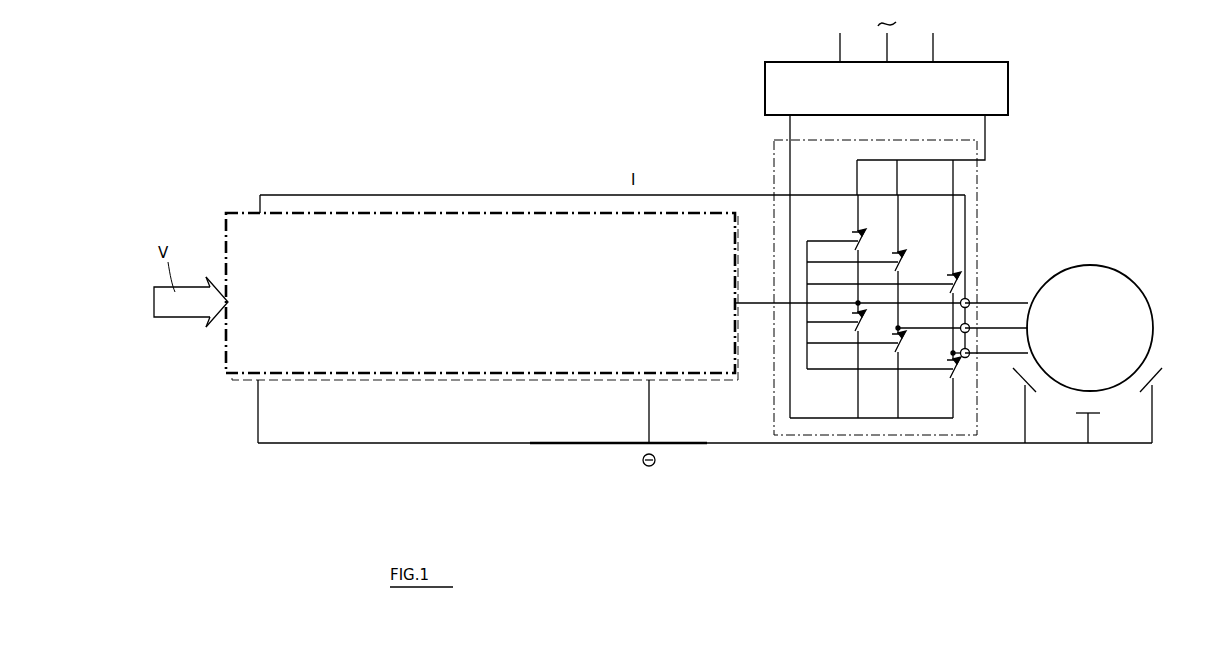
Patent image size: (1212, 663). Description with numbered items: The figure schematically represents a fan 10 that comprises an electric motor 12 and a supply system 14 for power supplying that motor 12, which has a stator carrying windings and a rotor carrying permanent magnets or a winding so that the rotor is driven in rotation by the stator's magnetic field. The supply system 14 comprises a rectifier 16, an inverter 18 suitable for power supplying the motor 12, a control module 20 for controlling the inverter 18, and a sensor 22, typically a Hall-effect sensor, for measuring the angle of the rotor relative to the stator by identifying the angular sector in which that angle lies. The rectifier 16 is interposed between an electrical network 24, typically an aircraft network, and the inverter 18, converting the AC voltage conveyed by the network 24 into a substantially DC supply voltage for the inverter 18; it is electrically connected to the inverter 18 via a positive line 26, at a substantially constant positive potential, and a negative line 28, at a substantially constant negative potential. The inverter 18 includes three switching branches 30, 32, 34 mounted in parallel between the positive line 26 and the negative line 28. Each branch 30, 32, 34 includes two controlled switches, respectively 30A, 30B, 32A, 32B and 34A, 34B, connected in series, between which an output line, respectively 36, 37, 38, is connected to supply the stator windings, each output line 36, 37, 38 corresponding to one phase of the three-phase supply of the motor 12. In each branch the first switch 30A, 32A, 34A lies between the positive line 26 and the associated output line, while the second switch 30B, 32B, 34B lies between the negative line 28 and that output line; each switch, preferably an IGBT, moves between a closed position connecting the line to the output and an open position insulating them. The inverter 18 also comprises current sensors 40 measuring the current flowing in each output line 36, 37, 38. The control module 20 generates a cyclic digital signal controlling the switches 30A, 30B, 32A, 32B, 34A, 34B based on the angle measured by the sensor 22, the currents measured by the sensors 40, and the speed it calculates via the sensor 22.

The fan 10 is at (1103, 134).
The electric motor 12 is at (1117, 272).
The supply system 14 is at (485, 112).
The rectifier 16 is at (1008, 93).
The inverter 18 is at (977, 186).
The control module 20 is at (299, 212).
The sensor 22 is at (1172, 428).
The electrical network 24 is at (952, 40).
The positive line 26 is at (985, 140).
The negative line 28 is at (789, 166).
The switching branch 30 is at (844, 306).
The first switch 30A is at (853, 240).
The second switch 30B is at (853, 322).
The switching branch 32 is at (886, 306).
The first switch 32A is at (895, 261).
The second switch 32B is at (895, 343).
The switching branch 34 is at (905, 306).
The first switch 34A is at (951, 281).
The second switch 34B is at (952, 374).
The output line 36 is at (1012, 302).
The output line 37 is at (1012, 328).
The output line 38 is at (1013, 355).
The current sensors 40 is at (969, 298).